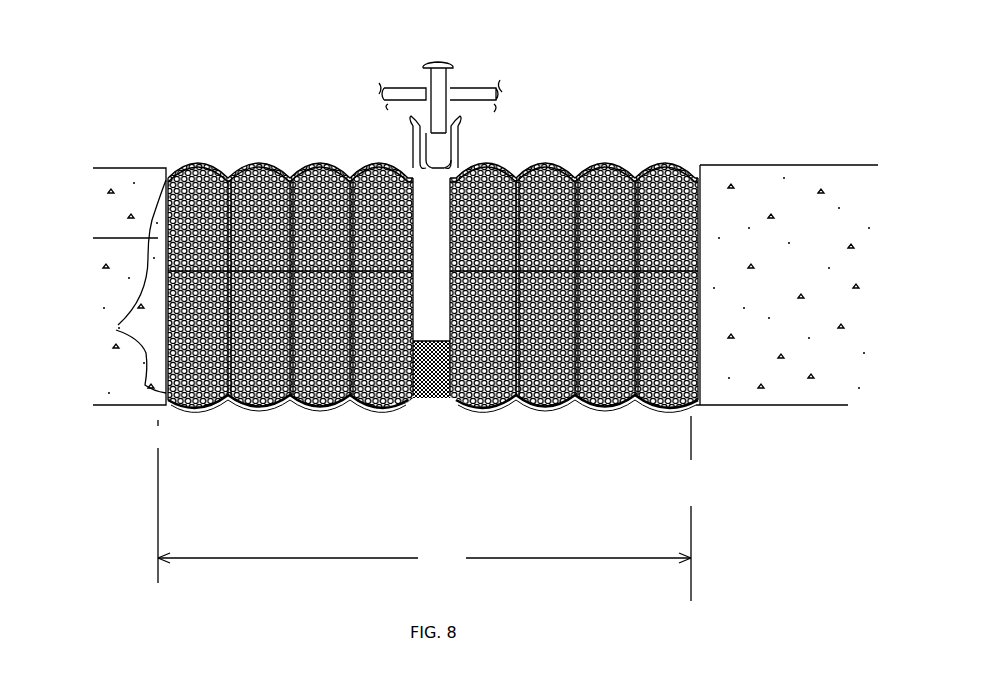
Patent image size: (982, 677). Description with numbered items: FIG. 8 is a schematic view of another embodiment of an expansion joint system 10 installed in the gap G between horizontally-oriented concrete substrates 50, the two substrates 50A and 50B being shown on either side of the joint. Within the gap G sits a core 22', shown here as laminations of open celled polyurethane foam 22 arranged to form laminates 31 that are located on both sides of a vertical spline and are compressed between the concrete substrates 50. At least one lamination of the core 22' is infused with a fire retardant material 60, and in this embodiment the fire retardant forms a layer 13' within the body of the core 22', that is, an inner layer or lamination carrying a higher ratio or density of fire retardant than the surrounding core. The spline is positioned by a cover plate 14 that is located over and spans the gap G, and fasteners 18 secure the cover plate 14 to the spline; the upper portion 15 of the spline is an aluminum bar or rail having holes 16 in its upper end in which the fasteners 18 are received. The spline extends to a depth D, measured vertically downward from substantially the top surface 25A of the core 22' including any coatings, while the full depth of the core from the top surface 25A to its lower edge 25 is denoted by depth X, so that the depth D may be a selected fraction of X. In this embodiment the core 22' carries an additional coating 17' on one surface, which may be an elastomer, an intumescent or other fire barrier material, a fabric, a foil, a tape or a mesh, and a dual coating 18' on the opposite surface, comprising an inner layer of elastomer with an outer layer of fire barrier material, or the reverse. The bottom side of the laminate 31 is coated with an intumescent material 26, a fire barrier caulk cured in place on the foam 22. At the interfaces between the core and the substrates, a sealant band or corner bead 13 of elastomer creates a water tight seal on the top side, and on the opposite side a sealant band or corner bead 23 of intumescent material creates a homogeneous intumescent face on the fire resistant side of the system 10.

The expansion joint system 10 is at (312, 46).
The sealant band or corner bead 13 is at (458, 143).
The layer comprising a fire retardant 13' is at (419, 432).
The cover plate 14 is at (396, 78).
The upper portion 15 is at (403, 125).
The holes 16 is at (438, 140).
The coating 17' is at (415, 130).
The fasteners 18 is at (445, 75).
The dual coating 18' is at (218, 431).
The open celled polyurethane foam 22 is at (433, 272).
The core 22' is at (427, 390).
The sealant band or corner bead 23 is at (160, 400).
The lower edge 25 is at (342, 396).
The top surface 25A is at (264, 150).
The intumescent material 26 is at (505, 402).
The laminates 31 is at (598, 210).
The concrete substrates 50 is at (846, 152).
The concrete substrate 50A is at (122, 157).
The concrete substrate 50B is at (788, 156).
The fire retardant material 60 is at (178, 370).
The depth X is at (133, 286).
The depth D is at (422, 328).
The gap G is at (424, 508).